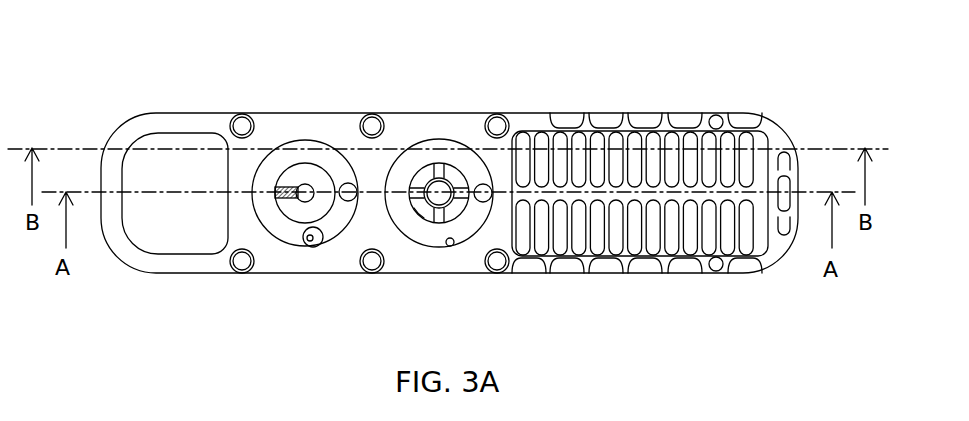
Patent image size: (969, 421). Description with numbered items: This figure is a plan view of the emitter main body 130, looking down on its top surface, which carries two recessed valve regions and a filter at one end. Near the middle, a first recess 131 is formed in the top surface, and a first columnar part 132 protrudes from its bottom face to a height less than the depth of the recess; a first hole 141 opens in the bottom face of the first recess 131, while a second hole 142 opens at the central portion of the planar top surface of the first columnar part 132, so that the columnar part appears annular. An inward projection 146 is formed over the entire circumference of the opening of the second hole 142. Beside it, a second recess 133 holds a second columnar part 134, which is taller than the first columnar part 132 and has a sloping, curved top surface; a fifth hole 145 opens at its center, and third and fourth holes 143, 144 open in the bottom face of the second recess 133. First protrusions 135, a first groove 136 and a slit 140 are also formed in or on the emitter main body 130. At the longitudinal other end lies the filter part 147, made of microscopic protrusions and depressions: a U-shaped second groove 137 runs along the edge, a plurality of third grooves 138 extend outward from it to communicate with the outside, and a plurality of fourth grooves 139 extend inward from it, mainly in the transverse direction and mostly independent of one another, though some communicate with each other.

The emitter main body 130 is at (168, 113).
The first recess 131 is at (452, 246).
The first columnar part 132 is at (428, 165).
The second recess 133 is at (343, 229).
The second columnar part 134 is at (311, 164).
The first protrusions 135 is at (487, 186).
The first groove 136 is at (290, 187).
The second groove 137 is at (744, 136).
The third groove 138 is at (725, 115).
The fourth groove 139 is at (677, 157).
The slit 140 is at (617, 148).
The first hole 141 is at (492, 176).
The second hole 142 is at (448, 181).
The third hole 143 is at (354, 183).
The fourth hole 144 is at (307, 246).
The fifth hole 145 is at (300, 184).
The projection 146 is at (424, 218).
The filter part 147 is at (668, 35).